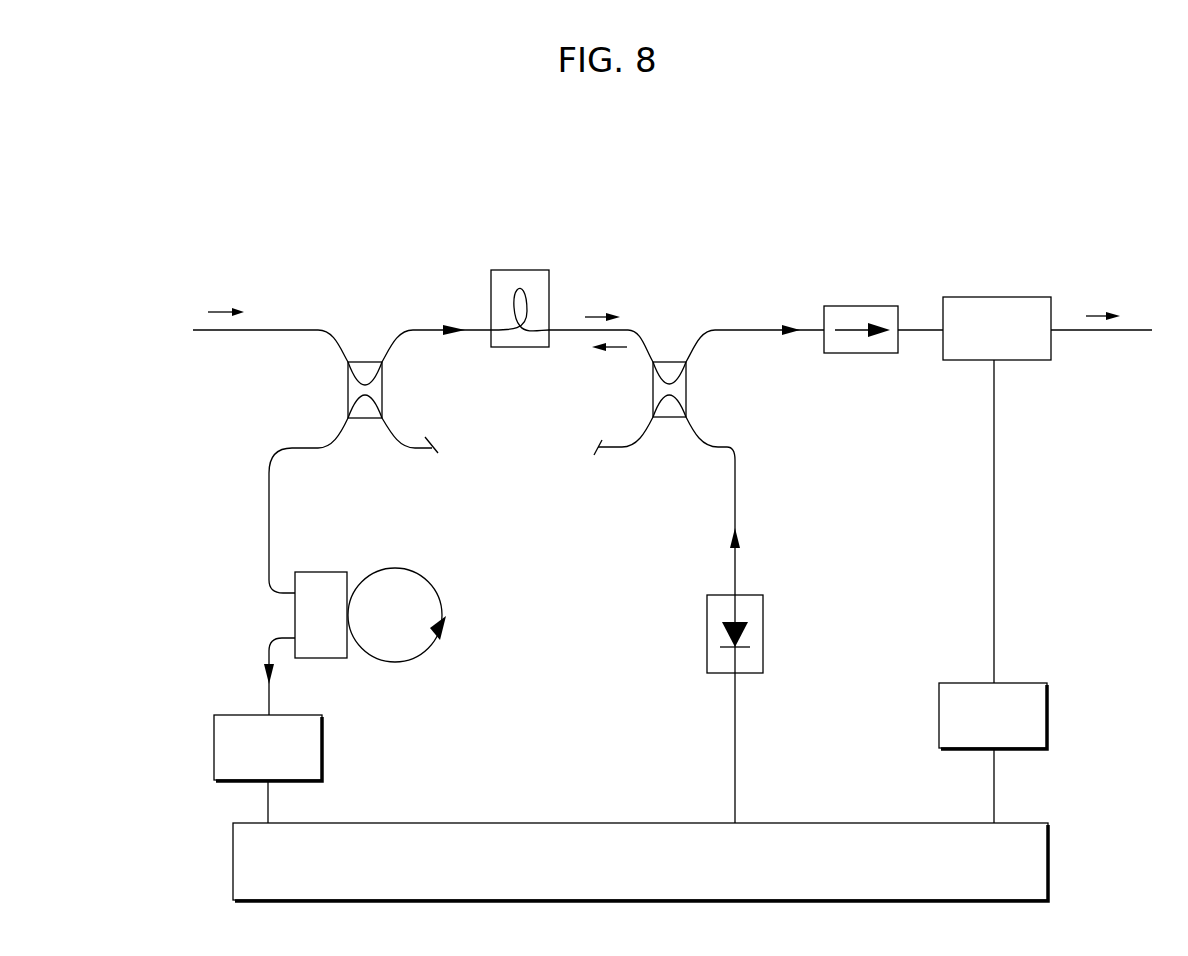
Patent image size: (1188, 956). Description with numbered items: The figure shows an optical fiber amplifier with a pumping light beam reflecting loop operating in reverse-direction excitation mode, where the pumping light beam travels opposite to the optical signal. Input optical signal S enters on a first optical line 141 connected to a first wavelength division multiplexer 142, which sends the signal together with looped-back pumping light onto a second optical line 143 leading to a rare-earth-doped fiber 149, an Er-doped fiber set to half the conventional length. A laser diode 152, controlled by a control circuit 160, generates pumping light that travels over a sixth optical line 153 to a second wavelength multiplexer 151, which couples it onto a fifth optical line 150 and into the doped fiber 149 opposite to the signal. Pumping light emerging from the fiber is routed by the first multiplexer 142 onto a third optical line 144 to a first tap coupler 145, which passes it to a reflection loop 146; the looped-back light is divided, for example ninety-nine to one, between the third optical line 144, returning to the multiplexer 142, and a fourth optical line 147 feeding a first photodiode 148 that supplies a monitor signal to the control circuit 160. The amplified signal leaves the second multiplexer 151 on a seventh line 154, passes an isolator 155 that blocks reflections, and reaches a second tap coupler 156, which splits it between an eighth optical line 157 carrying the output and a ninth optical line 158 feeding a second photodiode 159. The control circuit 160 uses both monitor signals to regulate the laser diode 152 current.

The first optical line 141 is at (288, 330).
The first wavelength division multiplexer 142 is at (363, 362).
The second optical line 143 is at (427, 333).
The third optical line 144 is at (273, 462).
The first tap coupler 145 is at (327, 572).
The reflection loop 146 is at (410, 573).
The fourth optical line 147 is at (267, 650).
The first photodiode 148 is at (214, 742).
The rare-earth-doped fiber 149 is at (528, 270).
The fifth optical line 150 is at (576, 327).
The second wavelength multiplexer 151 is at (667, 362).
The laser diode 152 is at (763, 633).
The sixth optical line 153 is at (740, 507).
The seventh line 154 is at (752, 330).
The isolator 155 is at (868, 306).
The second tap coupler 156 is at (996, 297).
The eighth optical line 157 is at (1110, 332).
The ninth optical line 158 is at (1000, 549).
The second photodiode 159 is at (939, 724).
The control circuit 160 is at (475, 823).